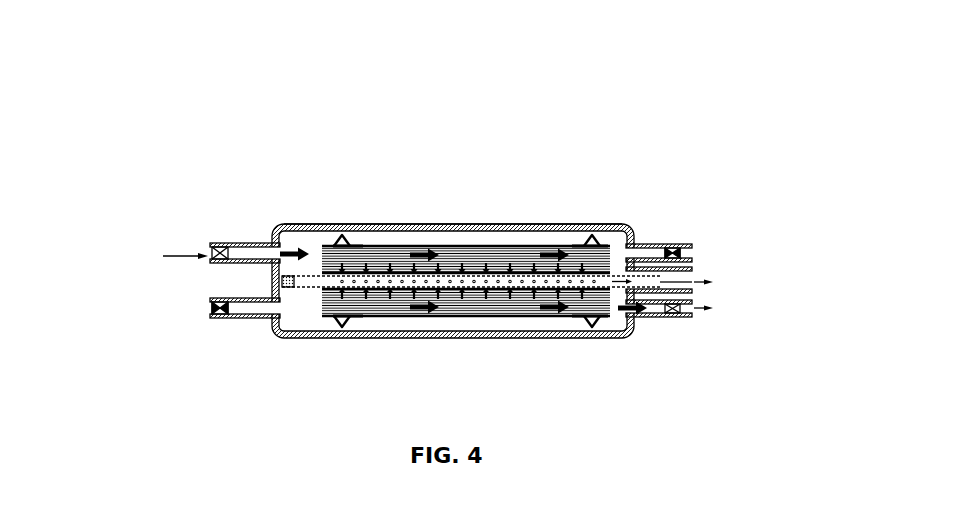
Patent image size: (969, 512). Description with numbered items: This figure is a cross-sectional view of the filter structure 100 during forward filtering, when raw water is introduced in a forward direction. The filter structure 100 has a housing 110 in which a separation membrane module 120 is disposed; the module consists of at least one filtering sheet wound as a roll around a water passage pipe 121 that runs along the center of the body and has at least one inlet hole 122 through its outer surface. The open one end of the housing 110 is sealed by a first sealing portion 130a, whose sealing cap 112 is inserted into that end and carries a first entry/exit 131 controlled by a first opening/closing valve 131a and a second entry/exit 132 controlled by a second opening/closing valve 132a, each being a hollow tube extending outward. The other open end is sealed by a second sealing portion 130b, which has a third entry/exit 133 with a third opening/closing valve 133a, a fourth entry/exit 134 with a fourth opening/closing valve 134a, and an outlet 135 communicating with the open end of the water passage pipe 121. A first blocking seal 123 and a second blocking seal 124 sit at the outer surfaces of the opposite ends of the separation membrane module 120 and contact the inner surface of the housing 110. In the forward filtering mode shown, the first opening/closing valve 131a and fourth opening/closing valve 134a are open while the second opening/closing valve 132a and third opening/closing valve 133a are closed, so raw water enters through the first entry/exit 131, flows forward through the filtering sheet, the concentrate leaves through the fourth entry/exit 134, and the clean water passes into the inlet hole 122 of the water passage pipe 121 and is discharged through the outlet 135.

The filter structure 100 is at (450, 218).
The housing 110 is at (470, 224).
The sealing cap 112 is at (312, 224).
The separation membrane module 120 is at (471, 317).
The water passage pipe 121 is at (462, 292).
The inlet hole 122 is at (446, 285).
The first blocking seal 123 is at (348, 330).
The second blocking seal 124 is at (598, 330).
The first sealing portion 130a is at (212, 271).
The second sealing portion 130b is at (697, 267).
The first entry/exit 131 is at (244, 207).
The first opening/closing valve 131a is at (227, 242).
The second entry/exit 132 is at (247, 351).
The second opening/closing valve 132a is at (225, 320).
The third entry/exit 133 is at (656, 211).
The third opening/closing valve 133a is at (672, 244).
The fourth entry/exit 134 is at (659, 347).
The fourth opening/closing valve 134a is at (675, 318).
The outlet 135 is at (697, 266).